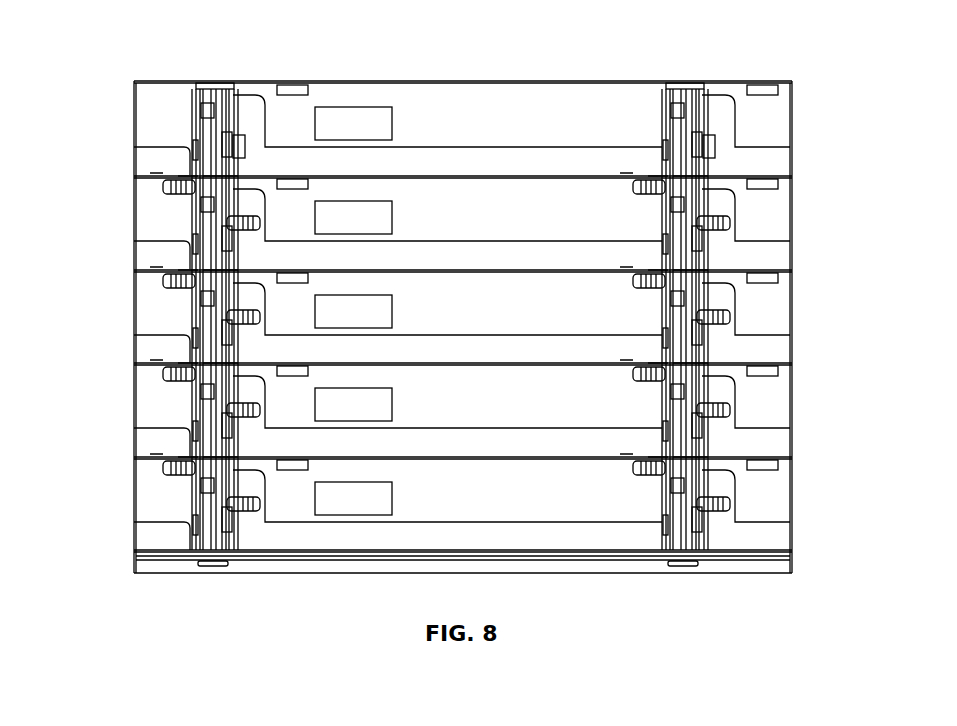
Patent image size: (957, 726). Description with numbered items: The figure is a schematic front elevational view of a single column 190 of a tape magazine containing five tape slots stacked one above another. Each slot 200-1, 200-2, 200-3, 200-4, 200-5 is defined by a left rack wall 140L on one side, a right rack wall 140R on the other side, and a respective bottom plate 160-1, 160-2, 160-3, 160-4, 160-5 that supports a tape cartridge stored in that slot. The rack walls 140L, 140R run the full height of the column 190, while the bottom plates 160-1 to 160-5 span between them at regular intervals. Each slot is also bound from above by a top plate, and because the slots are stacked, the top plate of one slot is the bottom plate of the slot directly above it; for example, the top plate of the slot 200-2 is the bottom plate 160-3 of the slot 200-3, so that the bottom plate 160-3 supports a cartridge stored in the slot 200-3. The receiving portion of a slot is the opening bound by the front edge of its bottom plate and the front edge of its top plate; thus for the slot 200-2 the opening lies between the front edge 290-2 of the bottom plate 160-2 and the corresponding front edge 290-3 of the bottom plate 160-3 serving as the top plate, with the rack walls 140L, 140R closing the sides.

The column 190 is at (396, 25).
The left rack wall 140L is at (227, 82).
The right rack wall 140R is at (690, 82).
The bottom plate 160-1 is at (512, 549).
The bottom plate 160-2 is at (512, 456).
The bottom plate 160-3 is at (512, 362).
The bottom plate 160-4 is at (512, 269).
The bottom plate 160-5 is at (512, 175).
The slot 200-1 is at (635, 497).
The slot 200-2 is at (630, 405).
The slot 200-3 is at (633, 300).
The slot 200-4 is at (653, 199).
The slot 200-5 is at (653, 123).
The front edge 290-2 is at (257, 458).
The front edge 290-3 is at (257, 365).